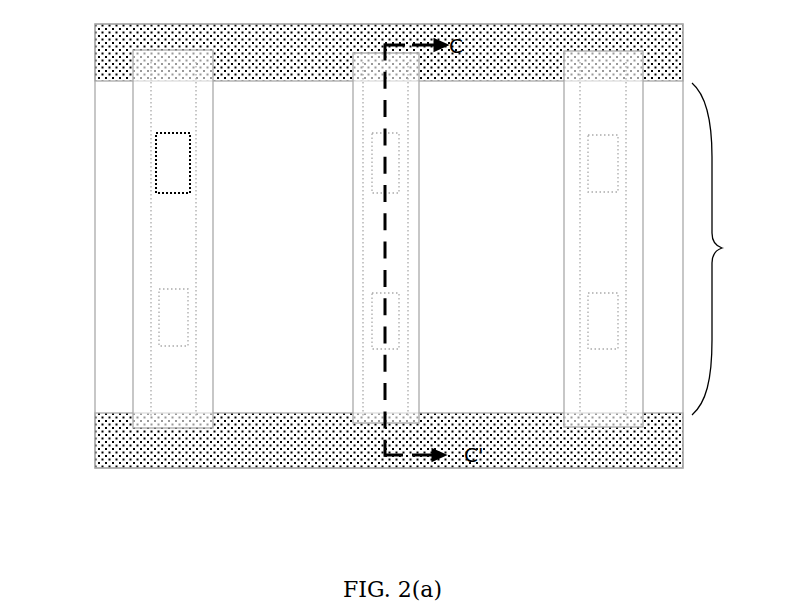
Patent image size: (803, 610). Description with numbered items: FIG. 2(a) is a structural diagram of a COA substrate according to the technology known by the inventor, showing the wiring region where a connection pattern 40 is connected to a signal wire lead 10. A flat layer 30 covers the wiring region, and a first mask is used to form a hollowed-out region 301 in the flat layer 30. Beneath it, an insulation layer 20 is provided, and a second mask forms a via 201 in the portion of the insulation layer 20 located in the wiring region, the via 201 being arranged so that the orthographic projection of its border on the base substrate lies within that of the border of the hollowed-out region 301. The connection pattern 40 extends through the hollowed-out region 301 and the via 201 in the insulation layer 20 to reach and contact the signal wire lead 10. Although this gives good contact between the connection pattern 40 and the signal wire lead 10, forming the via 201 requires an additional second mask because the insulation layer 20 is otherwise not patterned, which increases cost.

The signal wire lead 10 is at (376, 440).
The insulation layer 20 is at (123, 257).
The via 201 is at (168, 162).
The flat layer 30 is at (229, 447).
The hollowed-out region 301 is at (728, 249).
The connection pattern 40 is at (360, 347).